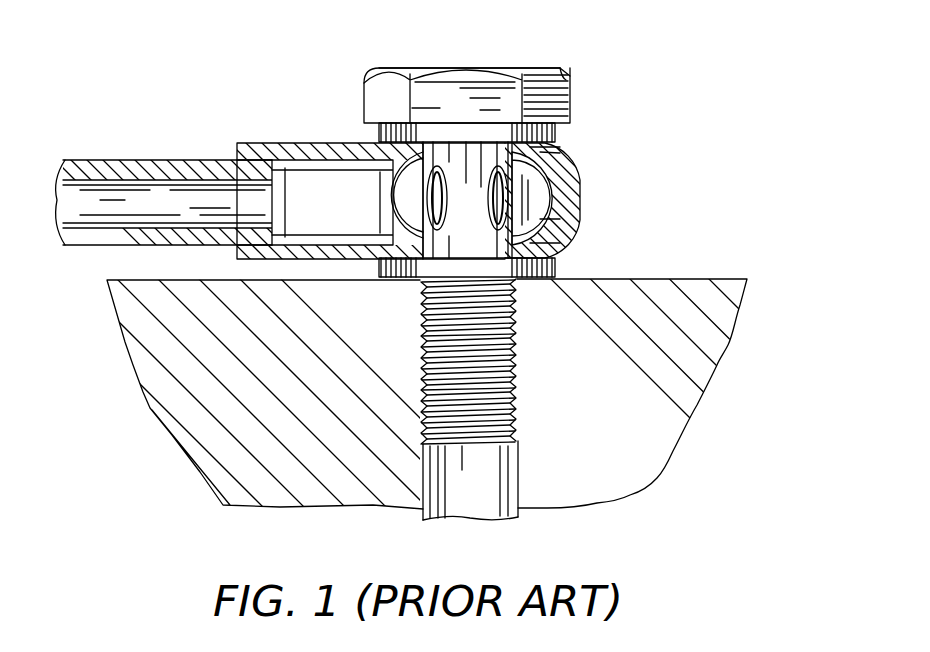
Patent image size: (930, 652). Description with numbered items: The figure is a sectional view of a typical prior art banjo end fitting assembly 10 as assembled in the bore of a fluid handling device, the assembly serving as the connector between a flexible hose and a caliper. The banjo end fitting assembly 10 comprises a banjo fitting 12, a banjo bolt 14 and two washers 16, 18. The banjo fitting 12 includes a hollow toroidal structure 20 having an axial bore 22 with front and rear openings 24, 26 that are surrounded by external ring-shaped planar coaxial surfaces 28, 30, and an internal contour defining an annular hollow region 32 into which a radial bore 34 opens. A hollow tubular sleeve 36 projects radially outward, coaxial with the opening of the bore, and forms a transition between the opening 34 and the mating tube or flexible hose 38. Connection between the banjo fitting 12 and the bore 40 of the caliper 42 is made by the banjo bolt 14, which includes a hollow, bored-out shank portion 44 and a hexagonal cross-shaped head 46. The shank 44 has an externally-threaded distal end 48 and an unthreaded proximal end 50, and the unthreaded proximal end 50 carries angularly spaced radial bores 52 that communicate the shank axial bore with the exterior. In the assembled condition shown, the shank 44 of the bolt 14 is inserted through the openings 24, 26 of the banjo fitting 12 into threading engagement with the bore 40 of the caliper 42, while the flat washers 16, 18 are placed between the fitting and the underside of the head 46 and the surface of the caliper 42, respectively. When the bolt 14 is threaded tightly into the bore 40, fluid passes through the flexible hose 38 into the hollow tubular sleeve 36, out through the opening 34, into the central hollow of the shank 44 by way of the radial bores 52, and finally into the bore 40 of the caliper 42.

The banjo end fitting assembly 10 is at (615, 61).
The banjo fitting 12 is at (283, 141).
The banjo bolt 14 is at (484, 64).
The washer 16 is at (563, 133).
The washer 18 is at (553, 262).
The hollow toroidal structure 20 is at (574, 166).
The axial bore 22 is at (583, 194).
The front opening 24 is at (561, 153).
The rear opening 26 is at (561, 219).
The ring-shaped planar coaxial surface 28 is at (561, 147).
The ring-shaped planar coaxial surface 30 is at (561, 243).
The annular hollow region 32 is at (413, 207).
The radial bore 34 is at (340, 158).
The hollow tubular sleeve 36 is at (242, 143).
The flexible hose 38 is at (110, 160).
The bore of the caliper 40 is at (485, 495).
The caliper 42 is at (698, 277).
The shank portion 44 is at (516, 326).
The externally-threaded distal end 48 is at (512, 378).
The hexagonal head 46 is at (411, 68).
The unthreaded proximal end 50 is at (457, 157).
The radial bores 52 is at (487, 205).